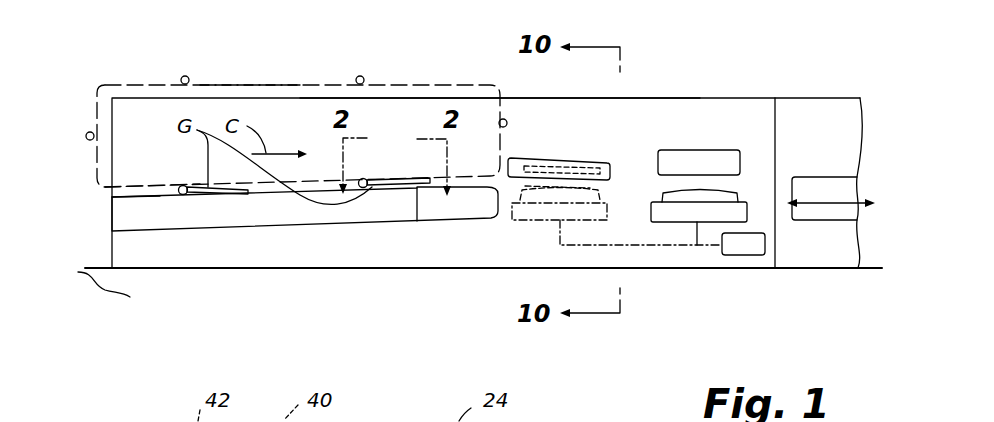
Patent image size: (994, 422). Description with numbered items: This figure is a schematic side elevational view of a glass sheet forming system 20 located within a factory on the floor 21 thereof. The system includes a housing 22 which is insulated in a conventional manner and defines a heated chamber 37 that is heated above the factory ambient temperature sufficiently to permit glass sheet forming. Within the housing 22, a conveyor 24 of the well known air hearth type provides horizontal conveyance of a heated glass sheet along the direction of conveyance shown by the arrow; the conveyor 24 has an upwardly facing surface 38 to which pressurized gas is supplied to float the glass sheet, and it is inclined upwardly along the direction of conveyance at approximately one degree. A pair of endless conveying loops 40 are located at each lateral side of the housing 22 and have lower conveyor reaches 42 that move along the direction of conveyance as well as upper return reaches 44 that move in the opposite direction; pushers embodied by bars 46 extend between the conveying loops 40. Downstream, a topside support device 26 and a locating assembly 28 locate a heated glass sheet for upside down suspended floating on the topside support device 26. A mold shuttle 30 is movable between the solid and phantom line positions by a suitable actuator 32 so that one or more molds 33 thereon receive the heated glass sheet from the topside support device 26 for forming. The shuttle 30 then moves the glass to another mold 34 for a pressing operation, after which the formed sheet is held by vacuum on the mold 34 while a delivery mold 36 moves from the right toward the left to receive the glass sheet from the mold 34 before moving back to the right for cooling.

The glass sheet forming system 20 is at (297, 274).
The floor 21 is at (81, 287).
The housing 22 is at (507, 98).
The conveyor 24 is at (242, 211).
The topside support device 26 is at (542, 155).
The locating assembly 28 is at (579, 159).
The mold shuttle 30 is at (609, 230).
The actuator 32 is at (758, 256).
The mold 33 is at (725, 200).
The mold 34 is at (710, 150).
The delivery mold 36 is at (808, 177).
The heated chamber 37 is at (408, 102).
The upwardly facing surface 38 is at (138, 196).
The endless conveying loops 40 is at (132, 79).
The lower conveyor reaches 42 is at (156, 190).
The upper return reaches 44 is at (247, 84).
The bars 46 is at (180, 187).